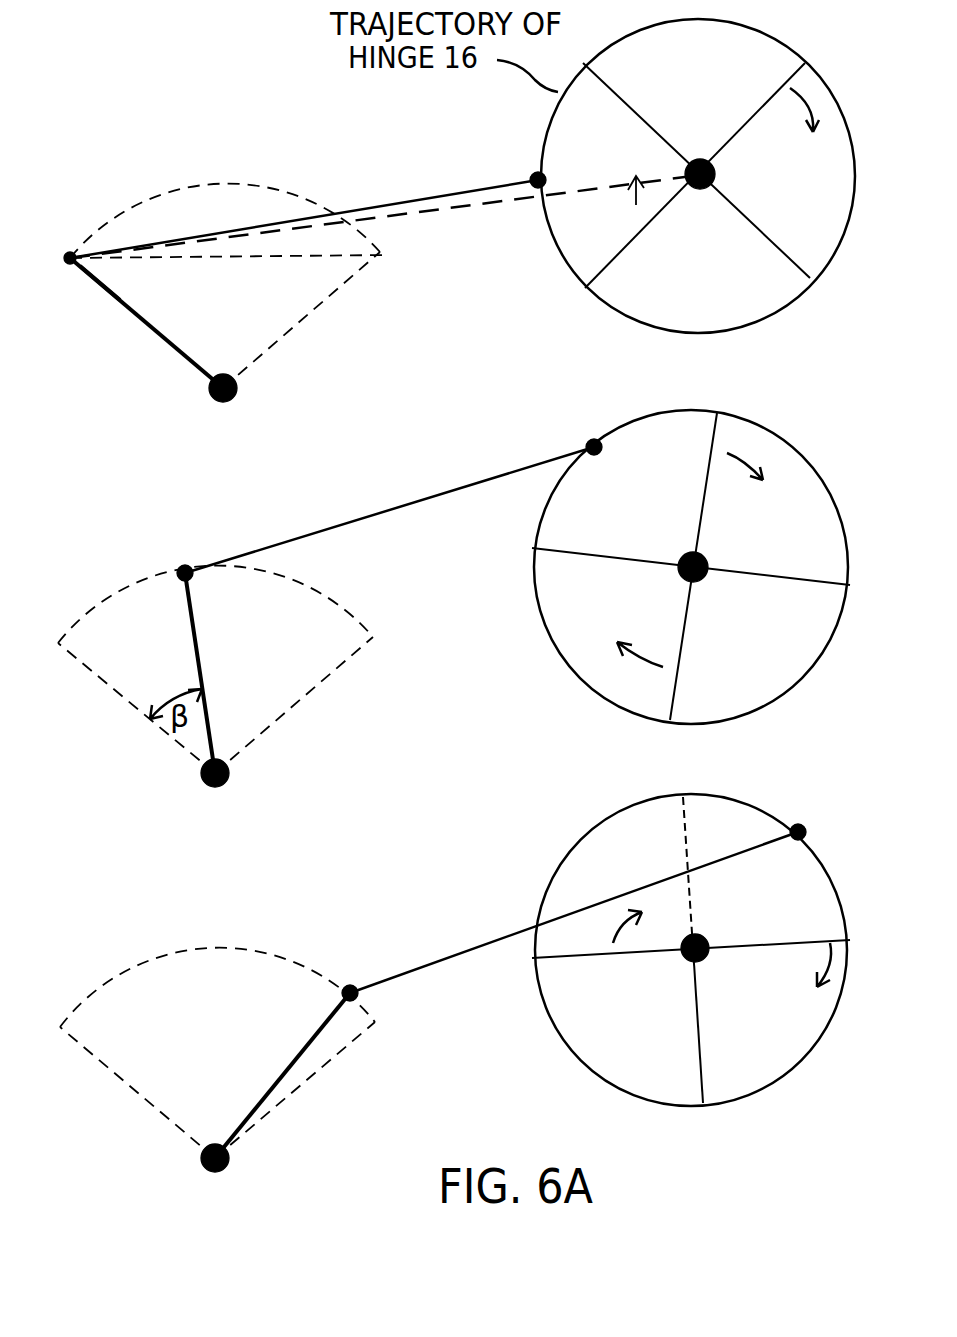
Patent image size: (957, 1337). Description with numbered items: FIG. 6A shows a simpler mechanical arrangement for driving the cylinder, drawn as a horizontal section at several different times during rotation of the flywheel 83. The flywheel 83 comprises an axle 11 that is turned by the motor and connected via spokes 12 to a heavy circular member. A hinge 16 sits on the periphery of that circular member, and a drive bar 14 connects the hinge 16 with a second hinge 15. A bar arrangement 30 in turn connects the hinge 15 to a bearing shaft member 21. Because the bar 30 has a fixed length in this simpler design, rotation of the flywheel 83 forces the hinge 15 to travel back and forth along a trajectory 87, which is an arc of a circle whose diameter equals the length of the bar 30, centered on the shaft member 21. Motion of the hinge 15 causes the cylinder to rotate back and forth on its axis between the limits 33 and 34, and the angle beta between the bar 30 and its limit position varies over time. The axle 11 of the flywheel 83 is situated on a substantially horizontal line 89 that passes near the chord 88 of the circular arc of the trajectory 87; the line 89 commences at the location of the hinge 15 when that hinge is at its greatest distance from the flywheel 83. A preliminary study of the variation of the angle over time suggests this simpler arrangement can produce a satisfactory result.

The axle 11 is at (700, 160).
The spokes 12 is at (628, 105).
The drive bar 14 is at (423, 197).
The hinge 15 is at (70, 250).
The hinge 16 is at (550, 180).
The bearing shaft member 21 is at (208, 392).
The bar arrangement 30 is at (147, 322).
The limit 33 is at (107, 301).
The limit 34 is at (302, 328).
The flywheel 83 is at (797, 293).
The trajectory 87 is at (318, 205).
The chord 88 is at (246, 258).
The horizontal line 89 is at (455, 212).